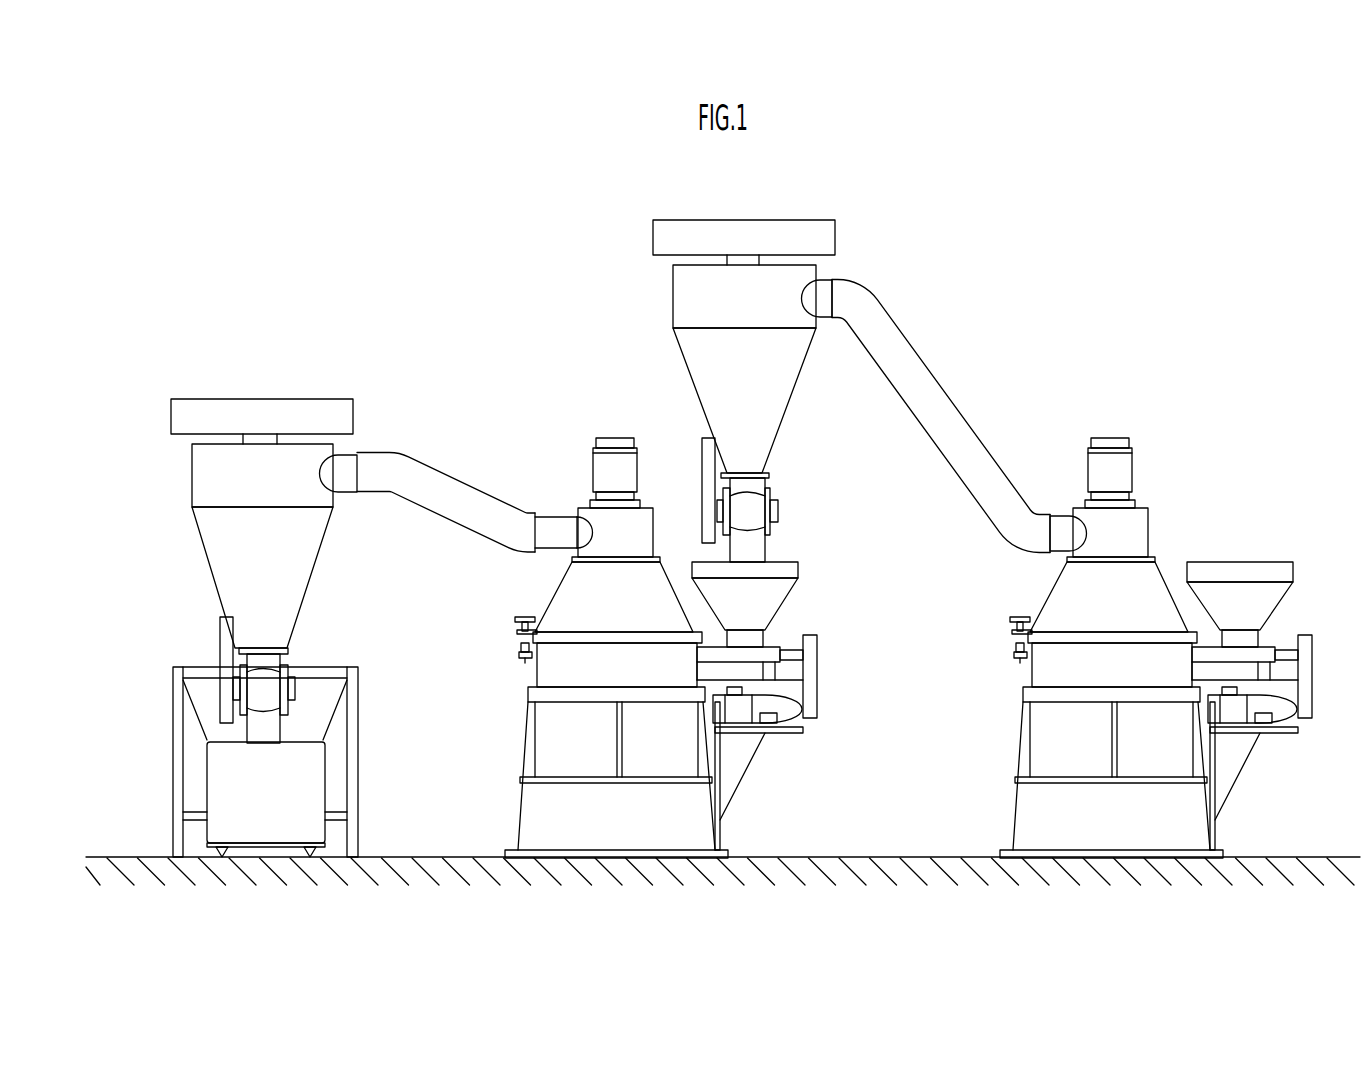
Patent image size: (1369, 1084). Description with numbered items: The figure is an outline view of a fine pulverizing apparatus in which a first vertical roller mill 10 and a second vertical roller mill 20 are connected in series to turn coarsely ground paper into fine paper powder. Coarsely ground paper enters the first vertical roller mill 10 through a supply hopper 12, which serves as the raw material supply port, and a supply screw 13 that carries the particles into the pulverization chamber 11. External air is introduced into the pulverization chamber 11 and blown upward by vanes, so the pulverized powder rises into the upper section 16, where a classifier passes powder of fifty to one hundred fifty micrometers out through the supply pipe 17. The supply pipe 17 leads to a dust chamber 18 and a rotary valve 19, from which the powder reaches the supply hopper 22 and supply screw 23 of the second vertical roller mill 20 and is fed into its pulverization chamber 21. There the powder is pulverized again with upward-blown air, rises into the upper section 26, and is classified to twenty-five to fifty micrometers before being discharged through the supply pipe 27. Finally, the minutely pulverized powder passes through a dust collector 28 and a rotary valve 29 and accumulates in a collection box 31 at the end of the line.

The first vertical roller mill 10 is at (1112, 412).
The pulverization chamber 11 is at (1033, 674).
The supply hopper 12 is at (1275, 598).
The supply screw 13 is at (1293, 670).
The upper section 16 is at (1137, 530).
The supply pipe 17 is at (962, 420).
The dust chamber 18 is at (780, 412).
The rotary valve 19 is at (757, 509).
The second vertical roller mill 20 is at (612, 398).
The pulverization chamber 21 is at (545, 675).
The supply hopper 22 is at (780, 595).
The supply screw 23 is at (800, 670).
The upper section 26 is at (643, 532).
The supply pipe 27 is at (462, 492).
The dust collector 28 is at (195, 480).
The rotary valve 29 is at (272, 687).
The collection box 31 is at (237, 782).